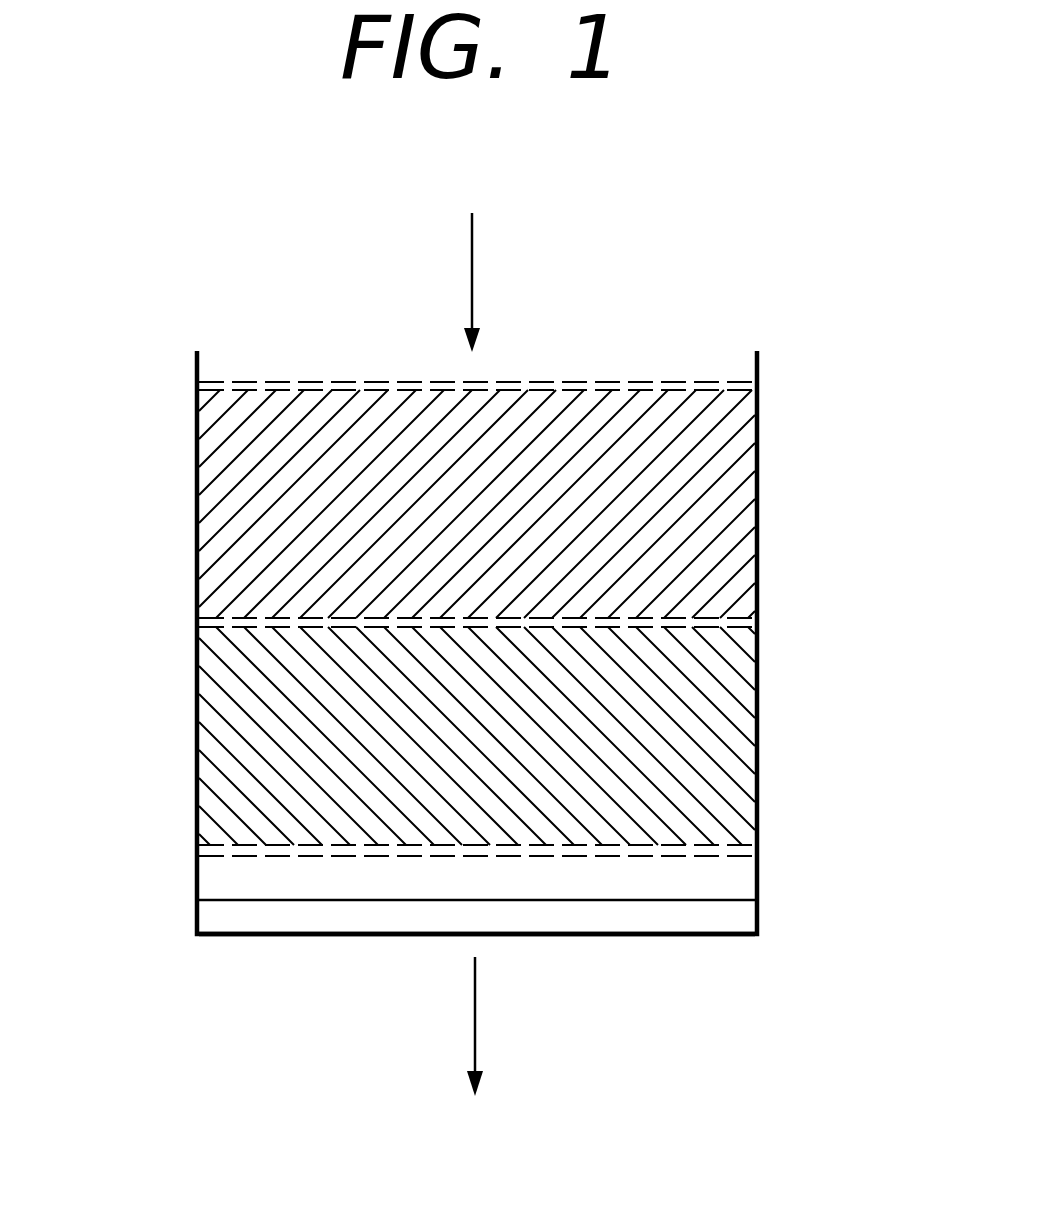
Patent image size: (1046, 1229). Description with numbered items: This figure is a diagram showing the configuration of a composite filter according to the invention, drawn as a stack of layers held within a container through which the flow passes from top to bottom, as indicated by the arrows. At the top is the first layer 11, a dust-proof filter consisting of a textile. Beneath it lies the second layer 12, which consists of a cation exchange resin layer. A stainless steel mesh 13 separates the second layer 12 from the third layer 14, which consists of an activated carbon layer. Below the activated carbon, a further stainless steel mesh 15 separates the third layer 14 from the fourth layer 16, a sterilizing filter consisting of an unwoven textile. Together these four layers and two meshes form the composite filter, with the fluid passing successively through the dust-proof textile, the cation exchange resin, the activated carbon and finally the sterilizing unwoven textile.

The first layer 11 is at (207, 384).
The second layer 12 is at (743, 493).
The stainless steel mesh 13 is at (207, 622).
The third layer 14 is at (743, 722).
The stainless steel mesh 15 is at (207, 848).
The fourth layer 16 is at (743, 915).